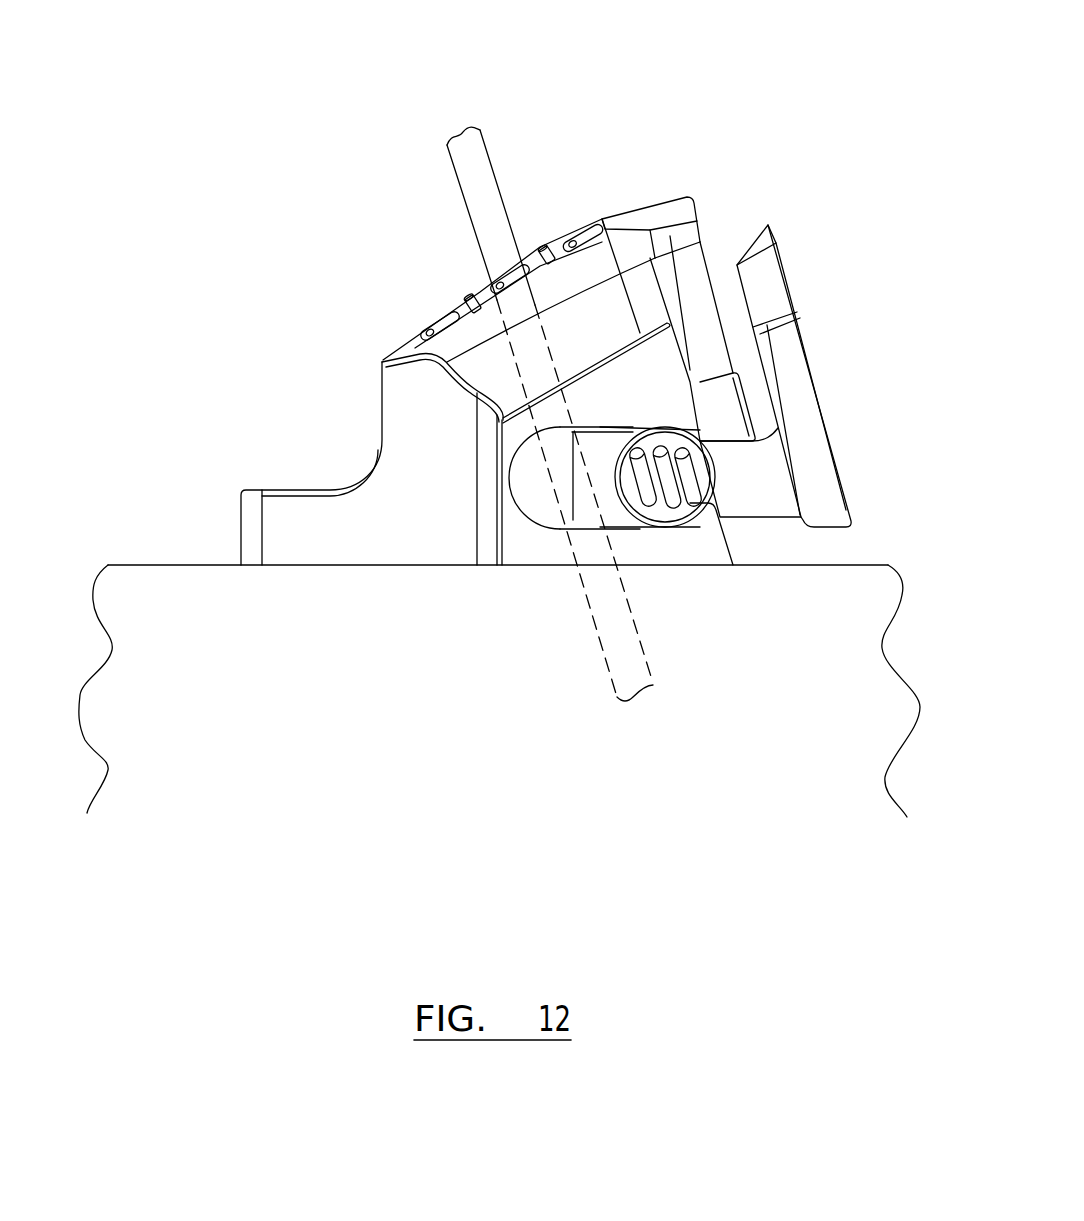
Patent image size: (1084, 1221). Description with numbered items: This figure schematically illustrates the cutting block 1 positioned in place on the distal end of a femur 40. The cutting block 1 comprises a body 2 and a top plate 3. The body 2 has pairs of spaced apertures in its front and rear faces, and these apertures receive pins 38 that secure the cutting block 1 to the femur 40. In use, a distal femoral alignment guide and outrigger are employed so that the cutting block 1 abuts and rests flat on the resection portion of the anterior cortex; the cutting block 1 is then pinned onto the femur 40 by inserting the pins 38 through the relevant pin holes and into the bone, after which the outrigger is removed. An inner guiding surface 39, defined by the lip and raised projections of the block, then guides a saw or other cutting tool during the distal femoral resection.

The cutting block 1 is at (658, 145).
The body 2 is at (413, 397).
The top plate 3 is at (793, 287).
The pins 38 is at (487, 200).
The inner guiding surface 39 is at (703, 300).
The femur 40 is at (277, 713).